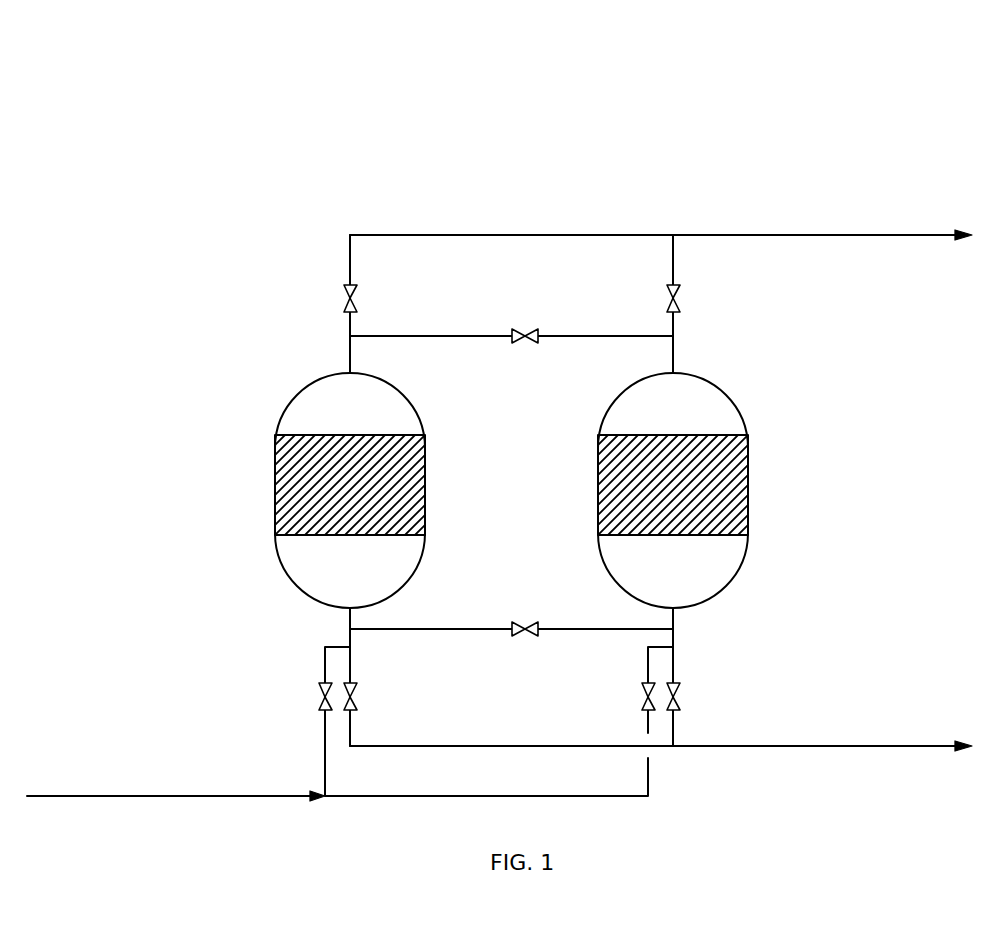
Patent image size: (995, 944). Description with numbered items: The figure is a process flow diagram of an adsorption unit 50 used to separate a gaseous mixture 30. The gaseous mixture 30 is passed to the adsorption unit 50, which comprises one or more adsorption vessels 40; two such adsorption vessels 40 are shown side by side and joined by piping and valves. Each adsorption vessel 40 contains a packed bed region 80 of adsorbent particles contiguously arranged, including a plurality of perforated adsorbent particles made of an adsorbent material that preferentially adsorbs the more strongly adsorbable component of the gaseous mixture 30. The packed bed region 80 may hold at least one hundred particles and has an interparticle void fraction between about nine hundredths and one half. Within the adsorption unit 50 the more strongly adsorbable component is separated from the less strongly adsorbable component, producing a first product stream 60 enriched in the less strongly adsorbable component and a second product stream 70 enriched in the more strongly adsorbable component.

The gaseous mixture 30 is at (163, 795).
The adsorption vessel 40 is at (285, 412).
The adsorption unit 50 is at (405, 205).
The first product stream 60 is at (797, 234).
The second product stream 70 is at (862, 746).
The packed bed region 80 is at (356, 485).